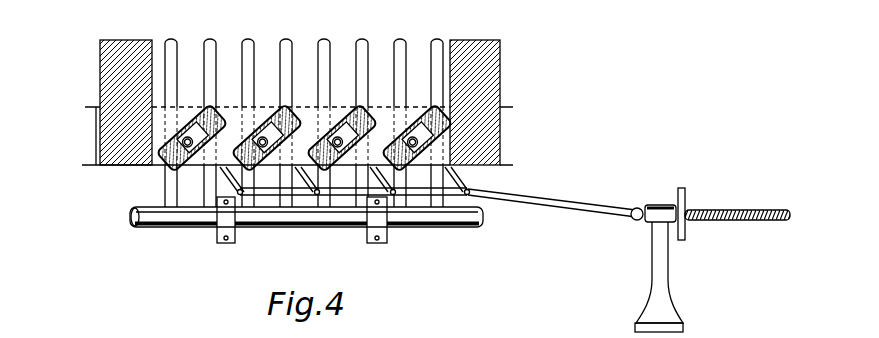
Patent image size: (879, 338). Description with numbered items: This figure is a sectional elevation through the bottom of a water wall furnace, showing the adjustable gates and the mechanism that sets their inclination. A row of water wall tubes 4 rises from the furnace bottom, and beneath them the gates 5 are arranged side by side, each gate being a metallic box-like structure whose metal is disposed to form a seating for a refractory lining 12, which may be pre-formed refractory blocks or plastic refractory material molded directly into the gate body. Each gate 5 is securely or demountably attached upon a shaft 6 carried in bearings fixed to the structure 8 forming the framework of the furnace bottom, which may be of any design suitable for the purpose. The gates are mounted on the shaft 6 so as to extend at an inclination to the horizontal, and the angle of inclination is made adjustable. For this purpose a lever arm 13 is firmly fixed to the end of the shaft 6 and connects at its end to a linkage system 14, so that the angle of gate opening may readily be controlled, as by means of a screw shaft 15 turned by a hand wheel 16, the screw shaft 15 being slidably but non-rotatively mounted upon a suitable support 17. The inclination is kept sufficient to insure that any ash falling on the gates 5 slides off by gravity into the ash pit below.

The water wall tubes 4 is at (291, 48).
The gates 5 is at (212, 107).
The shaft 6 is at (292, 113).
The structure forming the framework of the furnace bottom 8 is at (511, 134).
The refractory lining 12 is at (187, 119).
The lever arm 13 is at (228, 175).
The linkage system 14 is at (557, 206).
The screw shaft 15 is at (747, 192).
The hand wheel 16 is at (683, 190).
The support 17 is at (660, 270).